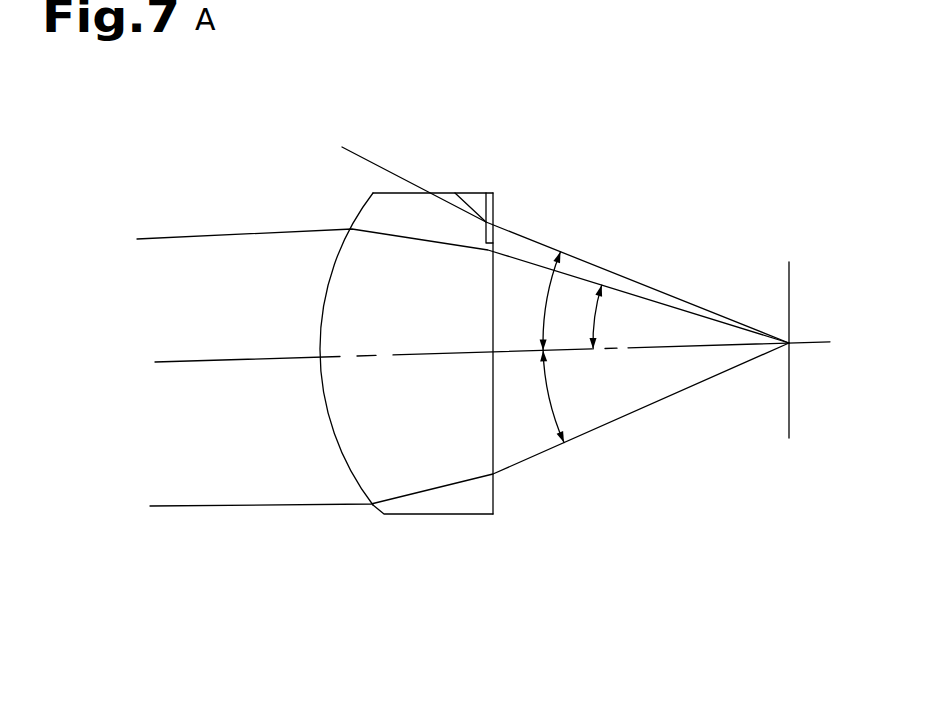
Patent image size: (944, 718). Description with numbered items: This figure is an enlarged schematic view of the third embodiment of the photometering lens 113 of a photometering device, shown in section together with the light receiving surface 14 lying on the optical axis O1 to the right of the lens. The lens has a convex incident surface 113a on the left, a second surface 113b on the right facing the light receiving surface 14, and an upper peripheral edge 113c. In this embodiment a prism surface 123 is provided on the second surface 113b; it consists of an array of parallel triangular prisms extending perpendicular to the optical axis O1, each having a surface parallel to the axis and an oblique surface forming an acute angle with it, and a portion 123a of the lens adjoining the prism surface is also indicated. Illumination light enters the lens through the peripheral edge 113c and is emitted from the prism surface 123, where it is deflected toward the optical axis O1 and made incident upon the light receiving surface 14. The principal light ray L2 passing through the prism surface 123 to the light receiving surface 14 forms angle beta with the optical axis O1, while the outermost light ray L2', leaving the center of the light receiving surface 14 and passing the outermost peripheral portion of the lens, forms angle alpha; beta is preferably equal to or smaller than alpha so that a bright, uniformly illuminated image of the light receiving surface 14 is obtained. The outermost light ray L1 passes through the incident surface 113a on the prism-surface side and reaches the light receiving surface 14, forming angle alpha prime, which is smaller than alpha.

The photometering lens 113 is at (438, 165).
The incident surface 113a is at (327, 412).
The second surface 113b is at (495, 492).
The peripheral edge 113c is at (393, 193).
The prism surface 123 is at (493, 217).
The inclined surface 123a is at (468, 192).
The light receiving surface 14 is at (787, 293).
The optical axis O1 is at (475, 360).
The outermost light ray L1 is at (443, 283).
The principal light ray L2 is at (545, 230).
The outermost light ray L2' is at (448, 432).